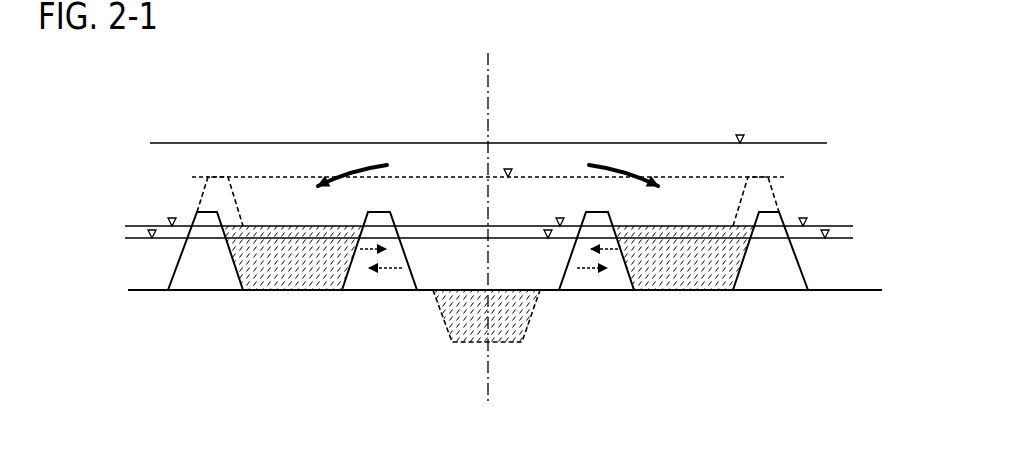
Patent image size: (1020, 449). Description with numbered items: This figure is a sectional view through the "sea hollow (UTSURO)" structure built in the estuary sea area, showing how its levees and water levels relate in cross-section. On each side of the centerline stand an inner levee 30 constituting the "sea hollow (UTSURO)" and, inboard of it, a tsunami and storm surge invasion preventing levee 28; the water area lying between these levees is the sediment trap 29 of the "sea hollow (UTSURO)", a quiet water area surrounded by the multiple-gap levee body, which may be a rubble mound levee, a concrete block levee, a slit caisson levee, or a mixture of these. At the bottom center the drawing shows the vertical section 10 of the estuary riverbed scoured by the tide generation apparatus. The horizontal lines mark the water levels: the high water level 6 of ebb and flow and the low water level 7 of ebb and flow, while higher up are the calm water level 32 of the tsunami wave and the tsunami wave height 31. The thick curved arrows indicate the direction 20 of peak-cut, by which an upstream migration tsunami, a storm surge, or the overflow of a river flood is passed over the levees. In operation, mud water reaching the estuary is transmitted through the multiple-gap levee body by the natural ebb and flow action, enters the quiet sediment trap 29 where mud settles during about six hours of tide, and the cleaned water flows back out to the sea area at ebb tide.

The high water level of ebb and flow 6 is at (142, 232).
The low water level of ebb and flow 7 is at (143, 290).
The vertical section of estuary riverbed scoured by tide generation apparatus 10 is at (483, 315).
The direction of peak-cut due to upstream migration tsunami or storm surge of river 20 is at (347, 168).
The tsunami and storm surge invasion preventing levee 28 is at (378, 275).
The sediment trap of sea hollow (UTSURO) 29 is at (297, 265).
The inner levee constituting sea hollow (UTSURO) 30 is at (205, 258).
The tsunami wave height 31 is at (423, 142).
The calm water level of tsunami wave 32 is at (460, 177).